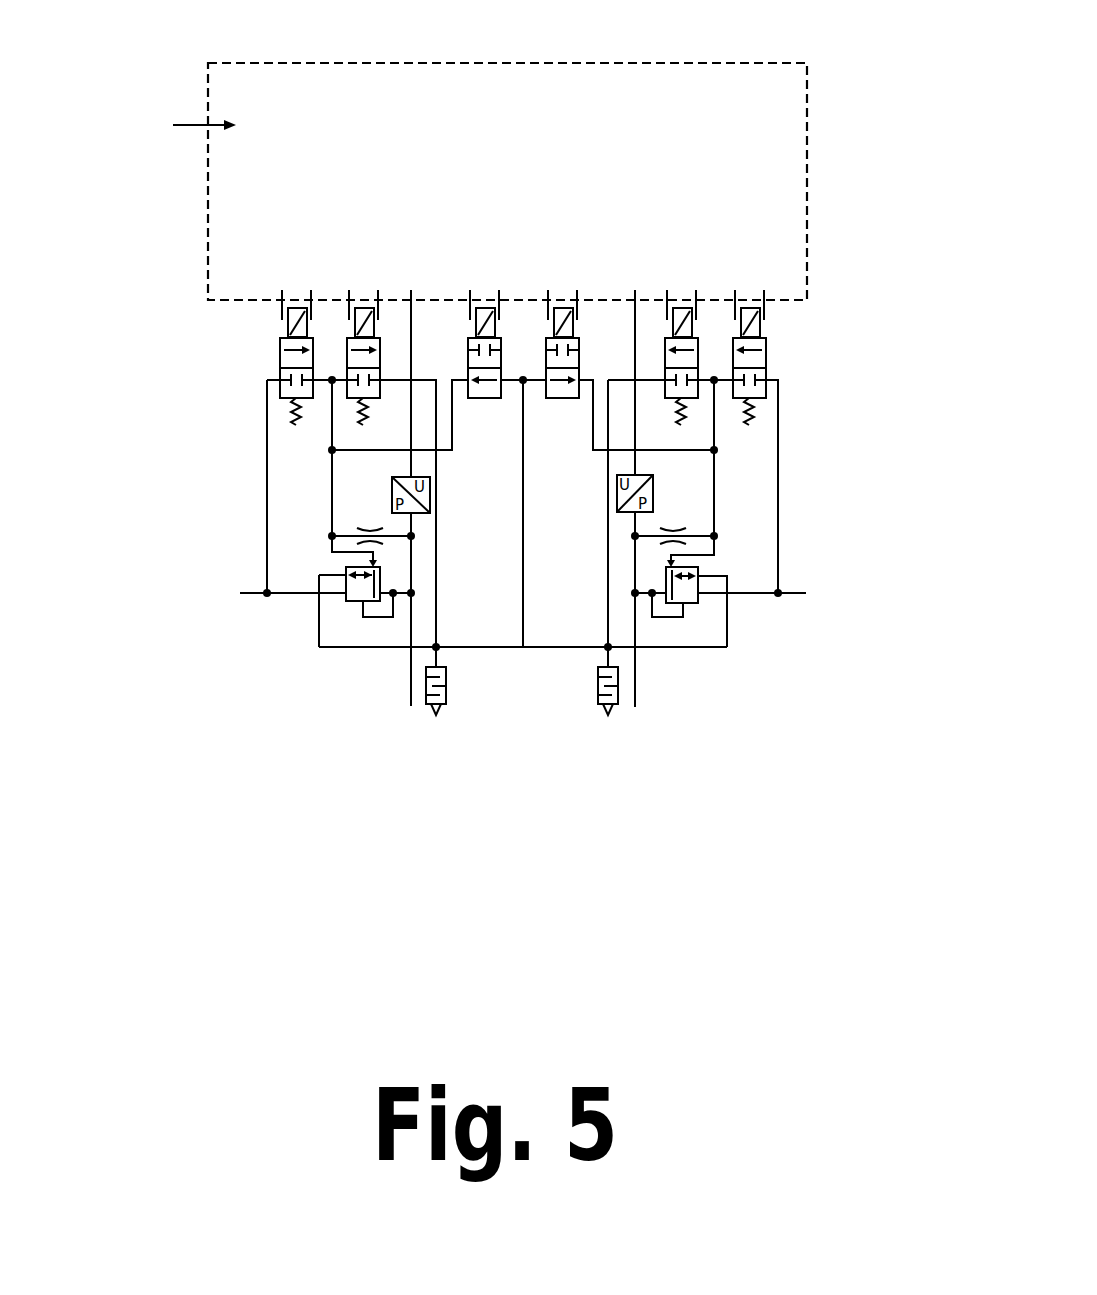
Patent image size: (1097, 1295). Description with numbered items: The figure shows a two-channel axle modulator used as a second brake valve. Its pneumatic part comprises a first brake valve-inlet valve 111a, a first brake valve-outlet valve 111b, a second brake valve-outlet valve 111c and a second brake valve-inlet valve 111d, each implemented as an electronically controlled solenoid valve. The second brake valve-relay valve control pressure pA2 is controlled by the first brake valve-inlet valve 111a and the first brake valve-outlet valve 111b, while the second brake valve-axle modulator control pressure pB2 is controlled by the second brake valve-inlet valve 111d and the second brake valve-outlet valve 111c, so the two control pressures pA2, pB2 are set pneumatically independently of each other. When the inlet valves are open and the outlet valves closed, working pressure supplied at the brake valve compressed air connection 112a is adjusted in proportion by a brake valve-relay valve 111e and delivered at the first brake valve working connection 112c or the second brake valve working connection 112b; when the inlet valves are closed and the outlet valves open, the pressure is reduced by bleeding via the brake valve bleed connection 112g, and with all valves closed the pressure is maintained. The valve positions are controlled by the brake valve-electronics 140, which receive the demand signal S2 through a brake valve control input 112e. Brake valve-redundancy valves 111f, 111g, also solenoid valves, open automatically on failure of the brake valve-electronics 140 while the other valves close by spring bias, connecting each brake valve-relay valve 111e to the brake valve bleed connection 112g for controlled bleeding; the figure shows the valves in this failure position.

The brake valve control input 112e is at (139, 118).
The demand signal S2 is at (161, 174).
The brake valve-electronics 140 is at (208, 300).
The first brake valve-inlet valve 111a is at (297, 315).
The first brake valve-outlet valve 111b is at (370, 307).
The second brake valve-outlet valve 111c is at (680, 315).
The second brake valve-inlet valve 111d is at (745, 317).
The brake valve-redundancy valve 111f is at (483, 308).
The brake valve-redundancy valve 111g is at (557, 307).
The brake valve-relay valve 111e is at (358, 598).
The brake valve compressed air connection 112a is at (245, 593).
The second brake valve working connection 112b is at (411, 701).
The second brake valve-axle modulator control pressure pB2 is at (332, 700).
The first brake valve working connection 112c is at (635, 708).
The second brake valve-relay valve control pressure pA2 is at (751, 699).
The brake valve bleed connection 112g is at (437, 716).